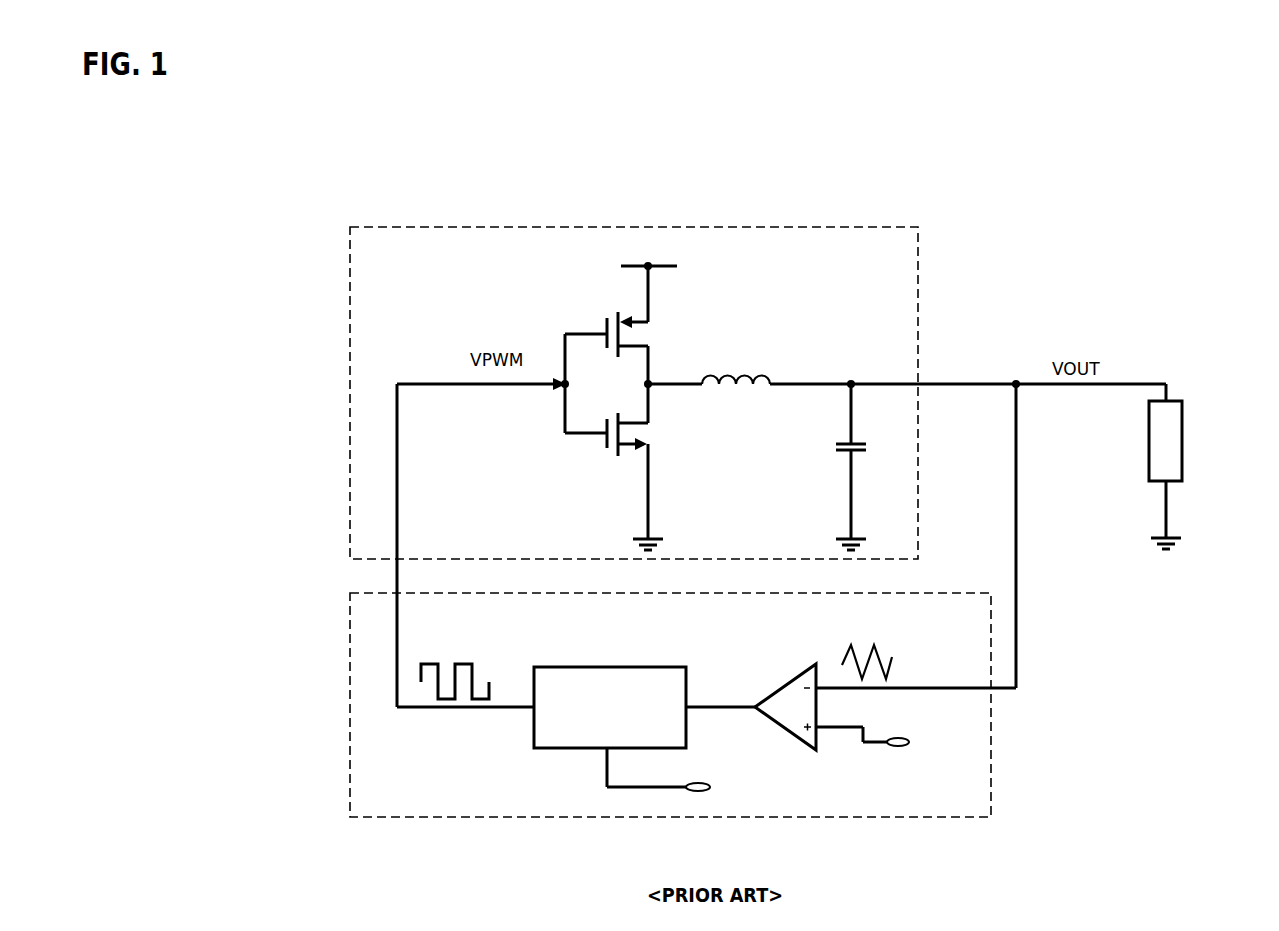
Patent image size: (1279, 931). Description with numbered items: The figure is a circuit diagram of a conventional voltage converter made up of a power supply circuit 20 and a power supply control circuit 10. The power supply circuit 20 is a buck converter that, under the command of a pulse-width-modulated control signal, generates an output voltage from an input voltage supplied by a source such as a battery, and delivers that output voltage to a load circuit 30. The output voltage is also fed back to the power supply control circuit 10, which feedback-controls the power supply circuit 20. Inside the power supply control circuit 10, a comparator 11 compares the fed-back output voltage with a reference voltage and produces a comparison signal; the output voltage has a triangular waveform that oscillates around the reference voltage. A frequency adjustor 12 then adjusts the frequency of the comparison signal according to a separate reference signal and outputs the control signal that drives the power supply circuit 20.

The power supply control circuit 10 is at (348, 666).
The comparator 11 is at (793, 677).
The frequency adjustor 12 is at (614, 666).
The power supply circuit 20 is at (348, 298).
The load circuit 30 is at (1183, 421).